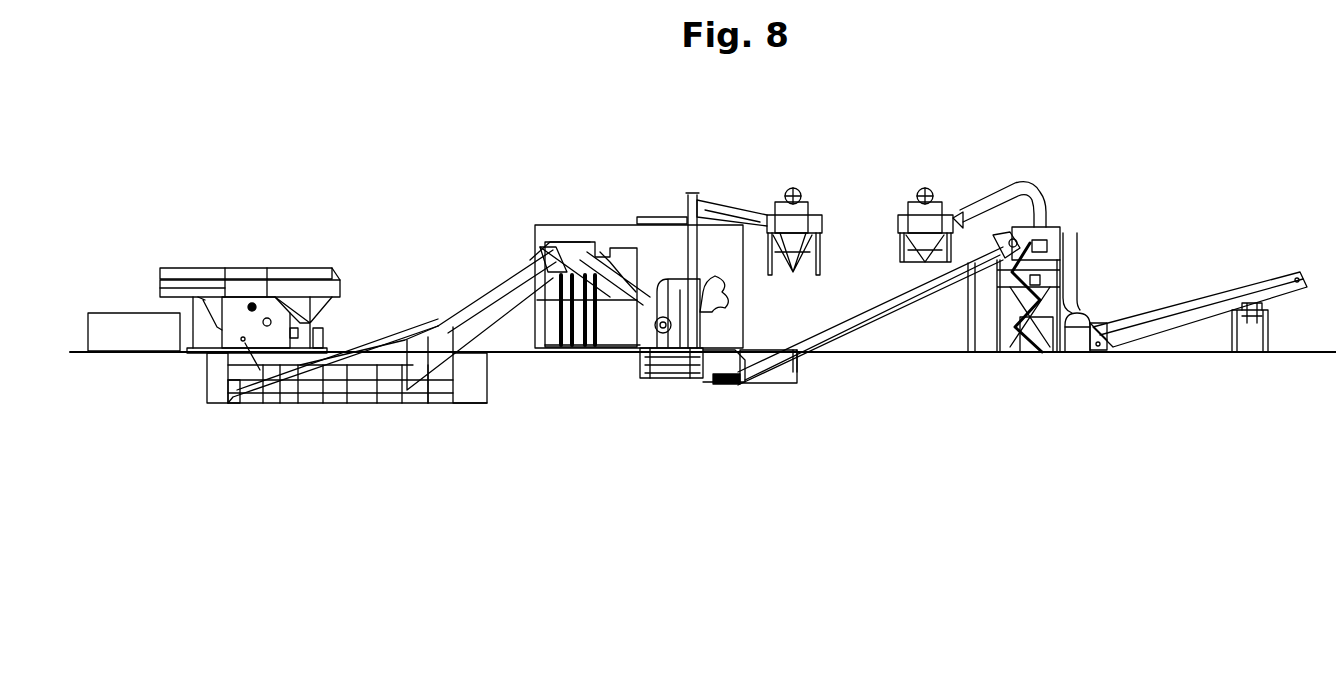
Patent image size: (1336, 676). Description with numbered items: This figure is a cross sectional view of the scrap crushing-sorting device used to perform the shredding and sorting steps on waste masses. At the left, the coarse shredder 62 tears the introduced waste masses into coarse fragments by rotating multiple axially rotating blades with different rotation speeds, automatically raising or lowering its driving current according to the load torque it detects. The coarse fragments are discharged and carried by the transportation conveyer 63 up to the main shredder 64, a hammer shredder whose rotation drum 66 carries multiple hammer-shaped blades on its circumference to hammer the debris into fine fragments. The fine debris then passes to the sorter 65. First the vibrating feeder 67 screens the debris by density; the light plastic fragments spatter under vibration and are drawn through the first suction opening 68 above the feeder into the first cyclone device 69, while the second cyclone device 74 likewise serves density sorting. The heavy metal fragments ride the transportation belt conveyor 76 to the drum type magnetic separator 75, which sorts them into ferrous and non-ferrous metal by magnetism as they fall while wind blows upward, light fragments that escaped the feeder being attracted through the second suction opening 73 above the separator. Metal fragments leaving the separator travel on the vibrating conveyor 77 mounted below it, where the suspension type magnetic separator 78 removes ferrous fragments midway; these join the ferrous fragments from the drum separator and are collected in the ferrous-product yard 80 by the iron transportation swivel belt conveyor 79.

The coarse shredder 62 is at (256, 256).
The transportation conveyer 63 is at (397, 340).
The main shredder 64 is at (655, 270).
The sorter 65 is at (715, 452).
The rotation drum 66 is at (635, 345).
The vibrating feeder 67 is at (695, 382).
The first suction opening 68 is at (715, 274).
The first cyclone device 69 is at (790, 190).
The second suction opening 73 is at (1050, 227).
The second cyclone device 74 is at (933, 188).
The drum type magnetic separator 75 is at (1045, 235).
The transportation belt conveyor 76 is at (867, 310).
The vibrating conveyor 77 is at (1085, 310).
The suspension type magnetic separator 78 is at (1110, 322).
The iron transportation swivel belt conveyor 79 is at (1240, 292).
The ferrous-product yard 80 is at (1268, 327).